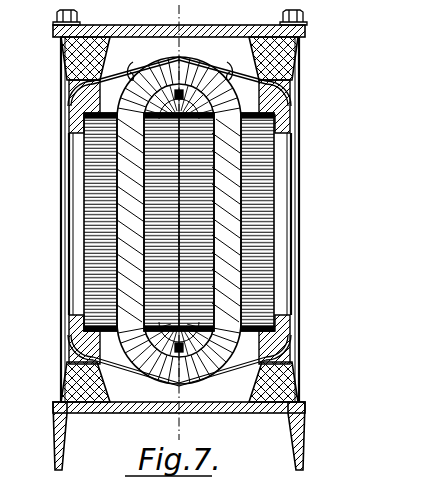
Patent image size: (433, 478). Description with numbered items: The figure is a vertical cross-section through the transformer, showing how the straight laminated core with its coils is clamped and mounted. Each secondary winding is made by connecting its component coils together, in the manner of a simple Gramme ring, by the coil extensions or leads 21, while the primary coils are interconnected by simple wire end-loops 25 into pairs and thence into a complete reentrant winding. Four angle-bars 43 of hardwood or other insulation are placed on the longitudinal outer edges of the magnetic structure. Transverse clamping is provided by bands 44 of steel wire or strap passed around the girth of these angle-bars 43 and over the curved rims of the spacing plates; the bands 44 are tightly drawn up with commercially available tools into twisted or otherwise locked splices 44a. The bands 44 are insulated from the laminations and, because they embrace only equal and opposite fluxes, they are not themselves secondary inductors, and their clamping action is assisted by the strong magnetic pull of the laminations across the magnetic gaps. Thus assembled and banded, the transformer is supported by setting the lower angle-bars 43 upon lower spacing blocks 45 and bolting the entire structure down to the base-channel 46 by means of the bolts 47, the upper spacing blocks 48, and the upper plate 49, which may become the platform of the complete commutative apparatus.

The coil extensions or leads 21 is at (229, 68).
The wire end-loops 25 is at (130, 68).
The angle-bars 43 is at (75, 106).
The bands 44 is at (70, 82).
The splices 44a is at (68, 203).
The lower spacing blocks 45 is at (66, 390).
The base-channel 46 is at (290, 414).
The bolts 47 is at (61, 253).
The upper spacing blocks 48 is at (66, 52).
The upper plate 49 is at (308, 26).